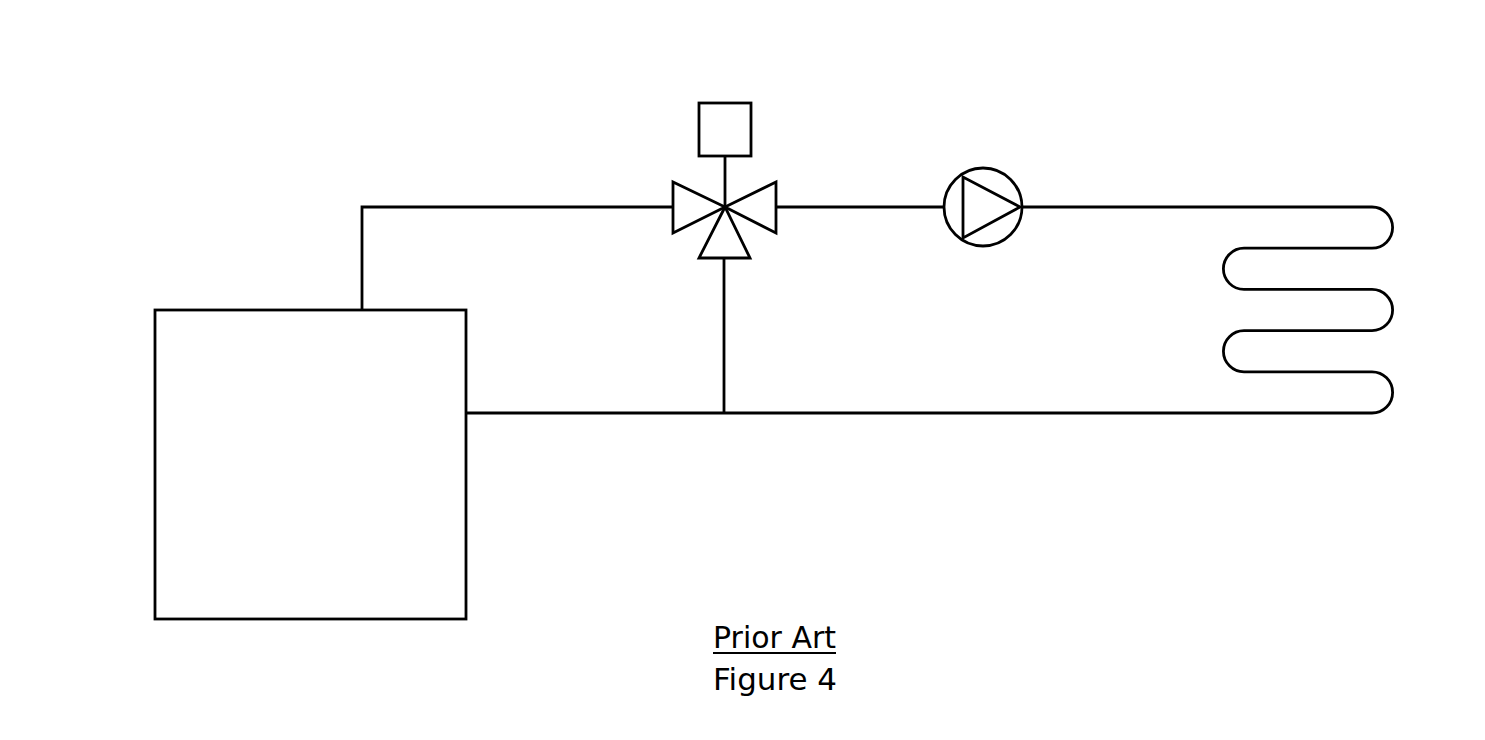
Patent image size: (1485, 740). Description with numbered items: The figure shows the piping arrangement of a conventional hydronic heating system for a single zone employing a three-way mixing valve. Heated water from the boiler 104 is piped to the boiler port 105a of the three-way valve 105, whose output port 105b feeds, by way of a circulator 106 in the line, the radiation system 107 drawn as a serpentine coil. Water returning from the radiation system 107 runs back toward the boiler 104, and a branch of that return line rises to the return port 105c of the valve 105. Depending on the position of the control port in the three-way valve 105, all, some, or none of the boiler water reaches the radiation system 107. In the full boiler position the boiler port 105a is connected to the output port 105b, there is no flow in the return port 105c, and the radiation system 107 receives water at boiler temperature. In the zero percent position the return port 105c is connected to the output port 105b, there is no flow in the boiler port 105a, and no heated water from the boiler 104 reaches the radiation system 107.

The boiler 104 is at (310, 428).
The three-way valve 105 is at (725, 179).
The boiler port 105a is at (655, 184).
The output port 105b is at (795, 184).
The return port 105c is at (755, 266).
The circulation pump 106 is at (1028, 192).
The radiation system 107 is at (1247, 310).